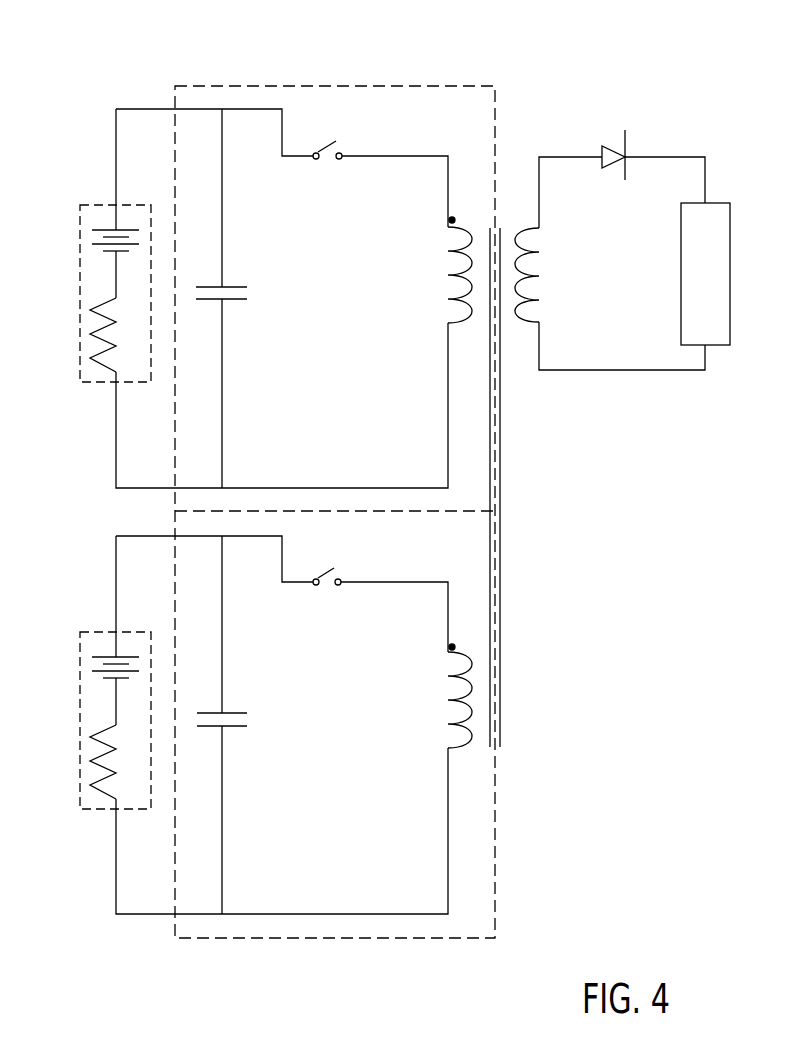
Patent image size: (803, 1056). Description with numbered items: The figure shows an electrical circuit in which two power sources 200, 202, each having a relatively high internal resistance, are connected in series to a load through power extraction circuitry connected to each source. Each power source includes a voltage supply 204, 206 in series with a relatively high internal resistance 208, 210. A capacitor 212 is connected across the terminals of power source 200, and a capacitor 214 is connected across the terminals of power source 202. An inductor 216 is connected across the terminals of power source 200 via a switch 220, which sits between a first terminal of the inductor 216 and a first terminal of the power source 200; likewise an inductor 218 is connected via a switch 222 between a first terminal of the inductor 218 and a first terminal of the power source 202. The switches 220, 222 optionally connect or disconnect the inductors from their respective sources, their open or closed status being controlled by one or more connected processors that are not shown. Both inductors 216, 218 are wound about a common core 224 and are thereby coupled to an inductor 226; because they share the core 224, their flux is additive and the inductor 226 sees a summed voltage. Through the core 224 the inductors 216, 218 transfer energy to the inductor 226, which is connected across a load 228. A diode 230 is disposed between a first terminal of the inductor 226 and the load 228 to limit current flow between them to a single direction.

The power source 200 is at (92, 292).
The power source 202 is at (92, 720).
The voltage supply 204 is at (94, 243).
The voltage supply 206 is at (92, 670).
The internal resistance 208 is at (102, 366).
The internal resistance 210 is at (102, 794).
The capacitor 212 is at (228, 287).
The capacitor 214 is at (210, 727).
The inductor 216 is at (449, 200).
The inductor 218 is at (452, 748).
The switch 220 is at (339, 132).
The switch 222 is at (345, 568).
The core 224 is at (500, 622).
The inductor 226 is at (543, 248).
The load 228 is at (725, 227).
The diode 230 is at (626, 128).